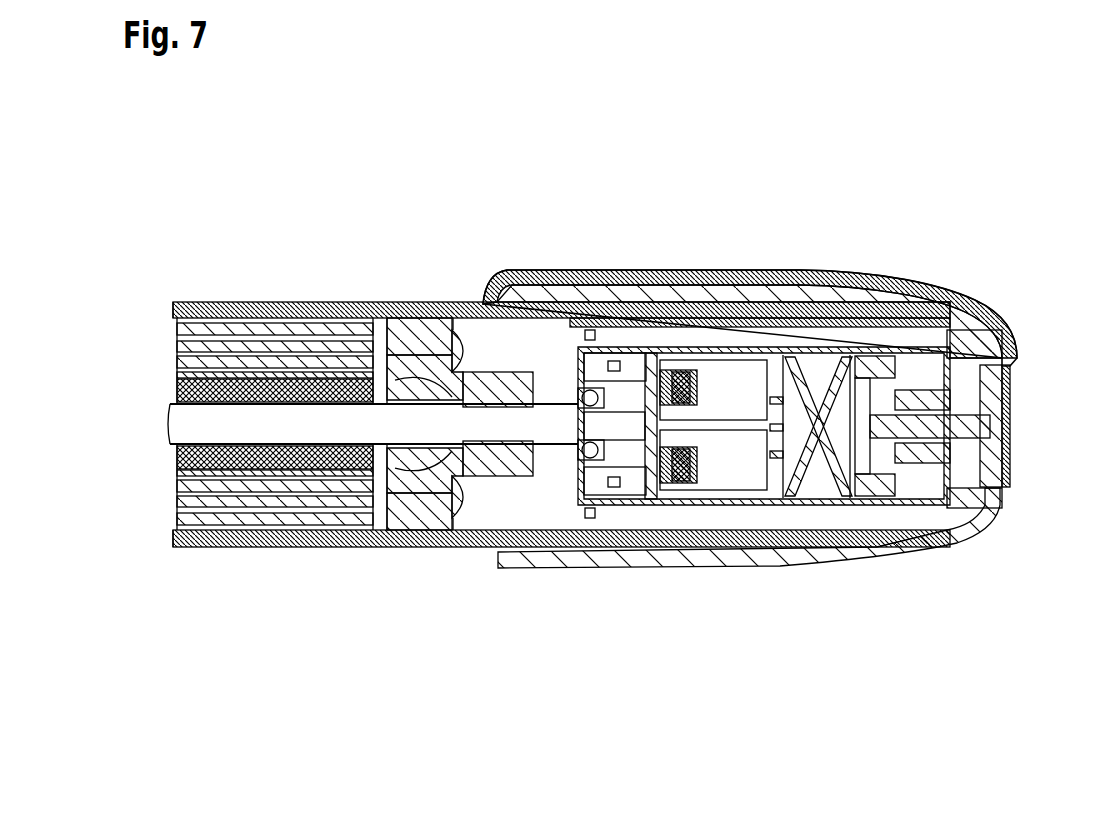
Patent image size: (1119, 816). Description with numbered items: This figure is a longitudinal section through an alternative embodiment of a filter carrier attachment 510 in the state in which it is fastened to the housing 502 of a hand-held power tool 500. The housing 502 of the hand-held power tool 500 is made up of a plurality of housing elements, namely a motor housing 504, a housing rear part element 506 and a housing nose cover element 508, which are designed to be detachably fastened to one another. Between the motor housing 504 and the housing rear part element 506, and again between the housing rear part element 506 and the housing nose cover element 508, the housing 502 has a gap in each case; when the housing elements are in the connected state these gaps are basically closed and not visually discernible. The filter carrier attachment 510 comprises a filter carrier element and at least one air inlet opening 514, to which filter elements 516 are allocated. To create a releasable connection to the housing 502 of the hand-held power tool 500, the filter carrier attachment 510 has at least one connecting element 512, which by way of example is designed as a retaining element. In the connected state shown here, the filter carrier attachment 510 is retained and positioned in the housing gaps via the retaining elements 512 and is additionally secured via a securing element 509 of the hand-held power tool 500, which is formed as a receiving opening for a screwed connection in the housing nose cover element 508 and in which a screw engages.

The hand-held power tool 500 is at (1028, 200).
The housing 502 is at (250, 248).
The motor housing 504 is at (346, 302).
The housing rear part element 506 is at (553, 296).
The housing nose cover element 508 is at (1010, 408).
The securing element 509 is at (1010, 438).
The filter carrier attachment 510 is at (806, 242).
The connecting element 512 is at (479, 304).
The air inlet opening 514 is at (702, 276).
The filter element 516 is at (622, 282).